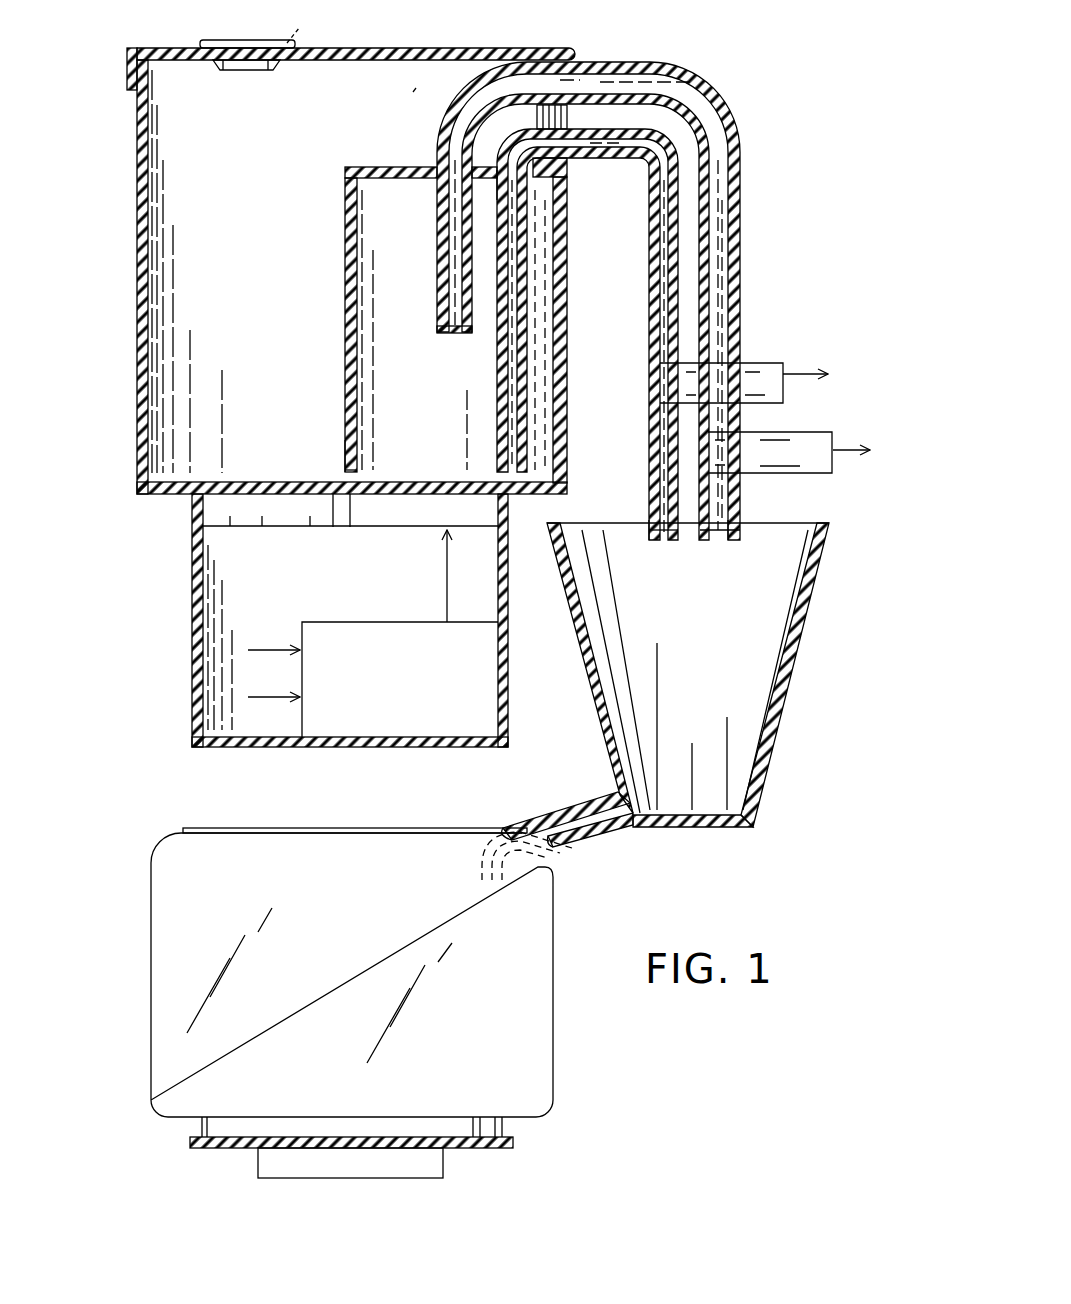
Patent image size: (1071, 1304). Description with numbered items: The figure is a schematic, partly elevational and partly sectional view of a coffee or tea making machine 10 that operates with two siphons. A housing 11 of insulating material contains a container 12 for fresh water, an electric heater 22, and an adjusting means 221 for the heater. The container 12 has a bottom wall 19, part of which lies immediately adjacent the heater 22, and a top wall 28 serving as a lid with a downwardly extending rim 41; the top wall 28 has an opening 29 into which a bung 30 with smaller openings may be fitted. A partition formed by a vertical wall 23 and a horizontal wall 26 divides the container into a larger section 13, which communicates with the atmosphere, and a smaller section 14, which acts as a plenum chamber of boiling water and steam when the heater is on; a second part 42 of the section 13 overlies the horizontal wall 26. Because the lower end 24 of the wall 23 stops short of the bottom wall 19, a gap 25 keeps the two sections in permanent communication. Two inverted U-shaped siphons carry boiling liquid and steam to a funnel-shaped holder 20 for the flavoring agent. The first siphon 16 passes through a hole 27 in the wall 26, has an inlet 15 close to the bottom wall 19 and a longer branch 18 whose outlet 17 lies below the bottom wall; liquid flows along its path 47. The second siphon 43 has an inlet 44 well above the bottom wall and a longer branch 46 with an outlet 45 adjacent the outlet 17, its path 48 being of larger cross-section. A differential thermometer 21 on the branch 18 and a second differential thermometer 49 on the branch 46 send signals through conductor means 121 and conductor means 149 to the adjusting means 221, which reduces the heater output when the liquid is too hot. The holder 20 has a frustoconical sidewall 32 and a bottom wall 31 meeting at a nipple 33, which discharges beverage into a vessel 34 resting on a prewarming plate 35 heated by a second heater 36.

The coffee or tea making machine 10 is at (165, 535).
The housing 11 is at (190, 677).
The container 12 is at (137, 372).
The section 13 is at (230, 278).
The section 14 is at (541, 359).
The inlet 15 is at (564, 477).
The siphon 16 is at (524, 291).
The outlet 17 is at (662, 543).
The longer branch 18 is at (648, 494).
The bottom wall 19 is at (240, 482).
The holder 20 is at (790, 704).
The temperature monitoring device 21 is at (760, 385).
The electric heater 22 is at (438, 535).
The vertical wall 23 is at (346, 337).
The lower end 24 is at (347, 462).
The clearance or gap 25 is at (356, 477).
The horizontal wall 26 is at (379, 167).
The hole 27 is at (496, 166).
The top wall 28 is at (373, 48).
The opening 29 is at (302, 21).
The bung 30 is at (249, 40).
The bottom wall 31 is at (687, 828).
The frustoconical sidewall 32 is at (603, 741).
The nipple 33 is at (600, 840).
The vessel 34 is at (562, 1018).
The prewarming plate 35 is at (483, 1150).
The second heater 36 is at (438, 1185).
The rim 41 is at (124, 78).
The second part 42 is at (413, 92).
The siphon 43 is at (745, 197).
The inlet 44 is at (457, 333).
The outlet 45 is at (728, 542).
The longer branch 46 is at (742, 494).
The path 47 is at (512, 390).
The path 48 is at (456, 250).
The second differential thermometer 49 is at (798, 450).
The conductor means 121 is at (798, 372).
The conductor means 149 is at (848, 455).
The adjusting means 221 is at (393, 698).